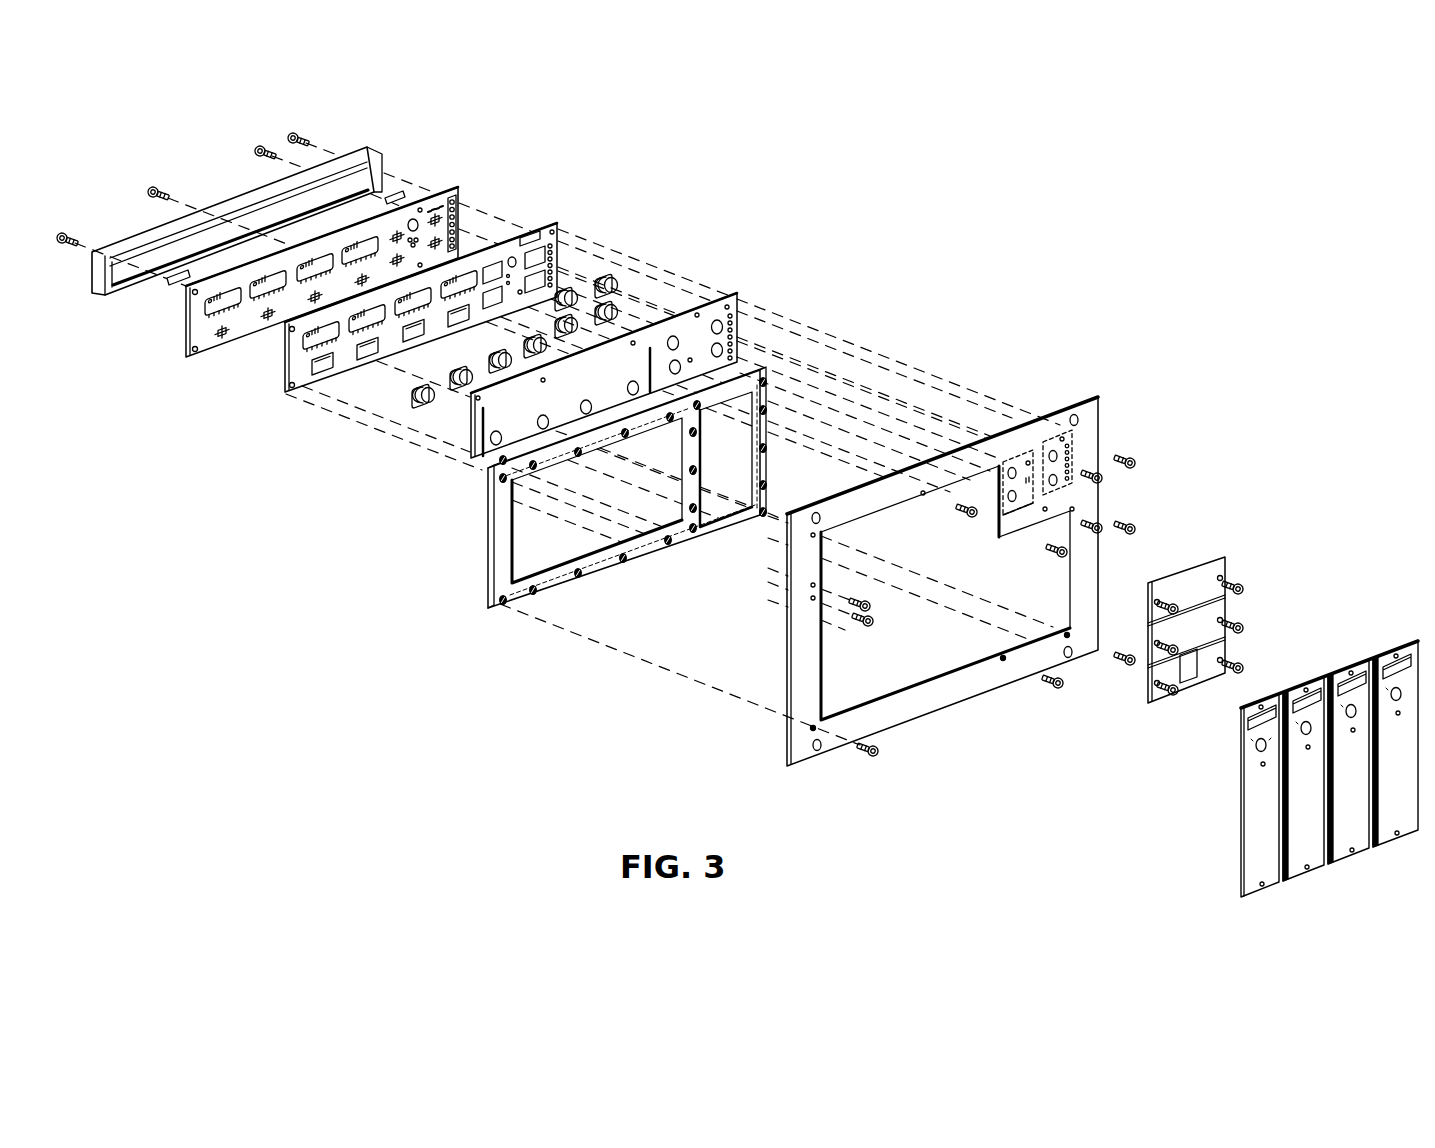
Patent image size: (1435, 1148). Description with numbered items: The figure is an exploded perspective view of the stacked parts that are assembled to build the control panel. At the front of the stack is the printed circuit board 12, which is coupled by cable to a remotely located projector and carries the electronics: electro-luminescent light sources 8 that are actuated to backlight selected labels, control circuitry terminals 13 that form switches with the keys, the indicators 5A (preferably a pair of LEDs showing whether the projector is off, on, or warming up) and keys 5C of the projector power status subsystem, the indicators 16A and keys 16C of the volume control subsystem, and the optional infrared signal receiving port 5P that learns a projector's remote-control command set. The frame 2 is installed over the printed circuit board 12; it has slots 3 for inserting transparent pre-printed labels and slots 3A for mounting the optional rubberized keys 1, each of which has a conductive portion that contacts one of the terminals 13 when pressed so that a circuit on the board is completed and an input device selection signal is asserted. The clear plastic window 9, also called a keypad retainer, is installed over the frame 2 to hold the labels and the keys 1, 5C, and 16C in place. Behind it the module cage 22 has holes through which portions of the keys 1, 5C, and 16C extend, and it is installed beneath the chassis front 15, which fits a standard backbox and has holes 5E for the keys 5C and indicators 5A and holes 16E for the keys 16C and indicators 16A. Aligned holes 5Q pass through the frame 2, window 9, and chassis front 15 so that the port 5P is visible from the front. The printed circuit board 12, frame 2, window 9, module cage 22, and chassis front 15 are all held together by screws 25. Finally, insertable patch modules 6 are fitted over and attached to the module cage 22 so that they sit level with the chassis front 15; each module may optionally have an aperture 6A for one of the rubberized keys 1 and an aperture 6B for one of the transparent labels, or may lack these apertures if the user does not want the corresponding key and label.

The rubberized key 1 is at (460, 388).
The frame 2 is at (552, 224).
The slot 3 is at (458, 328).
The slot 3A is at (356, 363).
The indicator 5A is at (409, 240).
The key 5C is at (574, 291).
The hole 5E is at (1029, 516).
The infrared signal receiving port 5P is at (416, 220).
The hole 5Q is at (1030, 461).
The patch module 6 is at (1297, 877).
The aperture 6A is at (1256, 746).
The aperture 6B is at (1301, 702).
The electro-luminescent light source 8 is at (360, 250).
The clear plastic window 9 is at (740, 290).
The printed circuit board 12 is at (185, 356).
The control circuitry terminal 13 is at (268, 318).
The chassis front 15 is at (1090, 398).
The indicator 16A is at (458, 200).
The key 16C is at (613, 277).
The hole 16E is at (1076, 440).
The module cage 22 is at (487, 517).
The screw 25 is at (1134, 459).